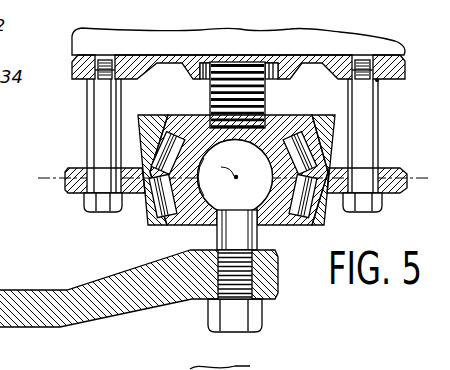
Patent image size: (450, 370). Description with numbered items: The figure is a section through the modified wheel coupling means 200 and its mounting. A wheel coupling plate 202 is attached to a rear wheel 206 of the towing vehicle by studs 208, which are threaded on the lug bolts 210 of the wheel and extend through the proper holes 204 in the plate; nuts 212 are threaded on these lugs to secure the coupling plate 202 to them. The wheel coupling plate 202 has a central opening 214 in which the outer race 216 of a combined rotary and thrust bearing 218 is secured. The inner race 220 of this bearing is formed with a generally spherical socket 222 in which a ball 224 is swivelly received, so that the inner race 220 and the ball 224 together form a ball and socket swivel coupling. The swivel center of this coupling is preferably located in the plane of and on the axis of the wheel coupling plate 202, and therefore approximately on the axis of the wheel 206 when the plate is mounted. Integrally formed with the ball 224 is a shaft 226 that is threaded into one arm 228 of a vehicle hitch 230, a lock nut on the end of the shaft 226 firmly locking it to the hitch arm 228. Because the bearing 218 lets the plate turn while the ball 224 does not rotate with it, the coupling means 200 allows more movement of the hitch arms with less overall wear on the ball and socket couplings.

The wheel coupling means 200 is at (90, 238).
The wheel coupling plate 202 is at (392, 194).
The holes 204 is at (88, 198).
The rear wheel 206 is at (72, 62).
The studs 208 is at (87, 111).
The lug bolts 210 is at (104, 70).
The nuts 212 is at (94, 210).
The central opening 214 is at (140, 162).
The outer race 216 is at (150, 218).
The combined rotary and thrust bearing 218 is at (179, 236).
The inner race 220 is at (186, 212).
The spherical socket 222 is at (249, 203).
The ball 224 is at (240, 250).
The shaft 226 is at (278, 274).
The arm 228 is at (1, 323).
The vehicle hitch 230 is at (10, 283).